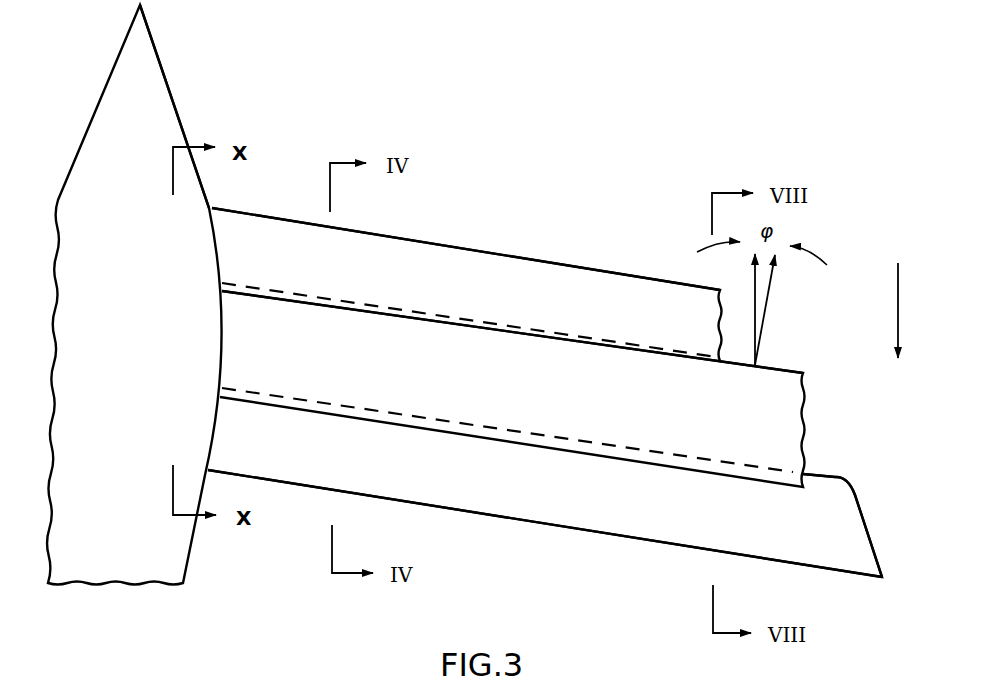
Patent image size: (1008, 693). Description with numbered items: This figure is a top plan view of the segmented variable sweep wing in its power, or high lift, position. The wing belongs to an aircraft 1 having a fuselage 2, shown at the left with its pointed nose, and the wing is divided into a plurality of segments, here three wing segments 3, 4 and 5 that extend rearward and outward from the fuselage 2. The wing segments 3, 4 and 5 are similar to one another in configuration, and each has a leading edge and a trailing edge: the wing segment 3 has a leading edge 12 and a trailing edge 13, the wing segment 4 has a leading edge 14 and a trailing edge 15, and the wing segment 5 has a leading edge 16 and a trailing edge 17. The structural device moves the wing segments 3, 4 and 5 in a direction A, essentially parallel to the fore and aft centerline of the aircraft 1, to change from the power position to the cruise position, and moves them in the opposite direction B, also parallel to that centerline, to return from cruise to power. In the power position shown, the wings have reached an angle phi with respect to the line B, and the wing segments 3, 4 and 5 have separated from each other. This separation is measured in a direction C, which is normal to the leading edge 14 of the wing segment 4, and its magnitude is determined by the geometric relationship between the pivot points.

The aircraft 1 is at (143, 357).
The fuselage 2 is at (165, 29).
The wing segment 3 is at (482, 278).
The wing segment 4 is at (788, 425).
The wing segment 5 is at (380, 482).
The leading edge 12 is at (352, 227).
The trailing edge 13 is at (500, 335).
The leading edge 14 is at (793, 371).
The trailing edge 15 is at (512, 444).
The leading edge 16 is at (846, 479).
The trailing edge 17 is at (569, 533).
The direction A is at (897, 305).
The direction B is at (756, 300).
The direction C is at (773, 277).